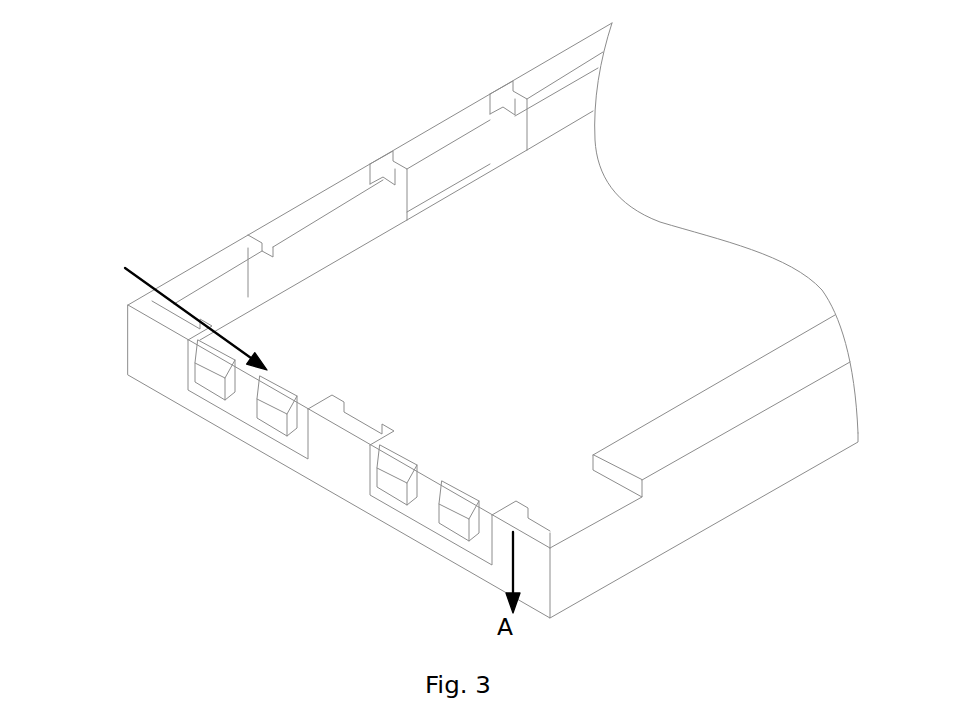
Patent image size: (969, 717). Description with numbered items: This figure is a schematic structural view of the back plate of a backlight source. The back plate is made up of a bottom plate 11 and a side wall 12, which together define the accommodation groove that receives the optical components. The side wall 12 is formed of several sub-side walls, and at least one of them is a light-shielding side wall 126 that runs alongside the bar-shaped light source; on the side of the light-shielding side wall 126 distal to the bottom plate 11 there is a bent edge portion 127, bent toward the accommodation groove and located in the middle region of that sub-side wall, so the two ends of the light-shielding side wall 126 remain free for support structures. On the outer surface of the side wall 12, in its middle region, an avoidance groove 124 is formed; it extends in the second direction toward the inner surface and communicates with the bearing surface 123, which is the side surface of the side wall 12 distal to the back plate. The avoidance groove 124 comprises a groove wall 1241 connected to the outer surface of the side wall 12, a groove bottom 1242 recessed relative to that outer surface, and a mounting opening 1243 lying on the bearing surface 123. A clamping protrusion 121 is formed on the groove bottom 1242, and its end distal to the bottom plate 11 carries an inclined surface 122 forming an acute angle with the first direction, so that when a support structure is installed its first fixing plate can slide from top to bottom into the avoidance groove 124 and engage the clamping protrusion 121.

The bottom plate 11 is at (560, 475).
The side wall 12 is at (452, 152).
The clamping protrusion 121 is at (403, 482).
The inclined surface 122 is at (463, 507).
The bearing surface 123 is at (211, 260).
The avoidance groove 124 is at (443, 490).
The groove wall 1241 is at (193, 355).
The groove bottom 1242 is at (252, 387).
The mounting opening 1243 is at (167, 313).
The light-shielding side wall 126 is at (587, 567).
The bent edge portion 127 is at (723, 407).